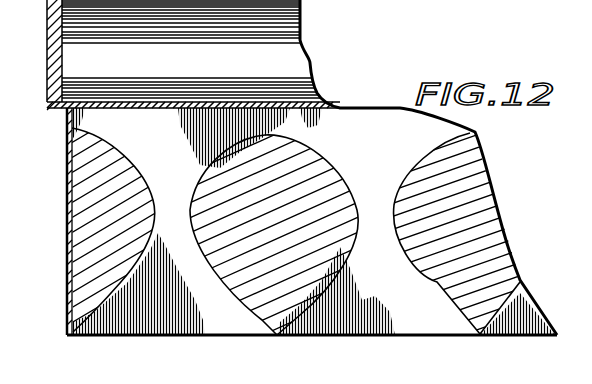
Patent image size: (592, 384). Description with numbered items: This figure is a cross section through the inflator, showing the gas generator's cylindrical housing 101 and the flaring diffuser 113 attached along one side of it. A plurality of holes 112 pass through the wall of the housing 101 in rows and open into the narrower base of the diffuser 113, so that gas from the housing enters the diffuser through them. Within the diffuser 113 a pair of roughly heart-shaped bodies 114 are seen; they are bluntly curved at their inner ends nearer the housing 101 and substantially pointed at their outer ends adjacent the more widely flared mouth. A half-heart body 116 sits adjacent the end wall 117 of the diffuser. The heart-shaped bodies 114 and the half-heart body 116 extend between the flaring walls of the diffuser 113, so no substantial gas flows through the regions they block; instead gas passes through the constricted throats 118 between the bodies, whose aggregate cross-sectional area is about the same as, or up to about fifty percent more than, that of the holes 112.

The cylindrical housing 101 is at (311, 64).
The holes 112 is at (125, 101).
The flaring diffuser 113 is at (215, 322).
The heart-shaped bodies 114 is at (477, 198).
The half-heart body 116 is at (88, 302).
The end wall 117 is at (70, 298).
The constricted throats 118 is at (165, 182).